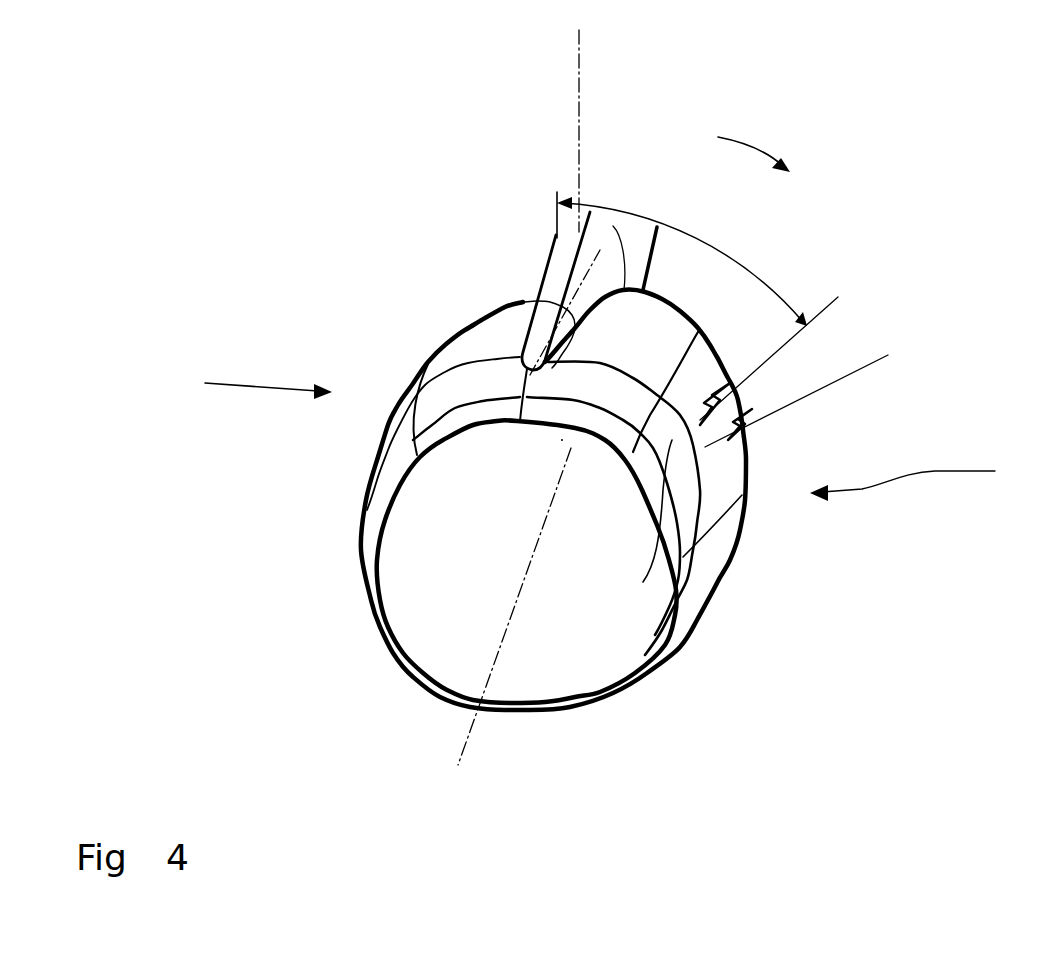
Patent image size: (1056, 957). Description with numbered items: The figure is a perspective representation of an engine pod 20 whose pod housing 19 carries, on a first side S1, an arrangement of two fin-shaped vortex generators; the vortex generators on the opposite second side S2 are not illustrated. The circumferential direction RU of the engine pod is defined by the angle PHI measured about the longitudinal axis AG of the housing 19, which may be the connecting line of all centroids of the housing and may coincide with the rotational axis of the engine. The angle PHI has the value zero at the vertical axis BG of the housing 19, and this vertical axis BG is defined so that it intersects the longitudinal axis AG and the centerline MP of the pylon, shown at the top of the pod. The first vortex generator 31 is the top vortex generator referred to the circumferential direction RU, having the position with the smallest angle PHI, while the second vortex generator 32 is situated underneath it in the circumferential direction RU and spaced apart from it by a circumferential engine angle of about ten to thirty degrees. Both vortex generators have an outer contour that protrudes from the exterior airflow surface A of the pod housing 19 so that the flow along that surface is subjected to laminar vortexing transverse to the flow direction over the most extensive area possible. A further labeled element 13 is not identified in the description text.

The pin / locking element 13 is at (543, 281).
The pod housing 19 is at (692, 605).
The engine pod 20 is at (762, 559).
The first vortex generator 31 is at (652, 482).
The second vortex generator 32 is at (643, 582).
The exterior airflow surface A is at (474, 348).
The centerline of the pylon MP is at (600, 305).
The vertical axis BG is at (580, 93).
The longitudinal axis AG is at (467, 723).
The angle phi PHI is at (712, 299).
The circumferential direction RU is at (772, 153).
The first side S1 is at (927, 480).
The second side S2 is at (249, 382).